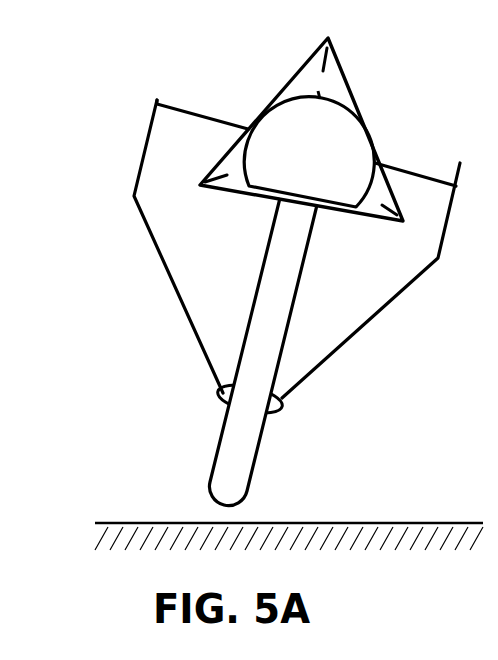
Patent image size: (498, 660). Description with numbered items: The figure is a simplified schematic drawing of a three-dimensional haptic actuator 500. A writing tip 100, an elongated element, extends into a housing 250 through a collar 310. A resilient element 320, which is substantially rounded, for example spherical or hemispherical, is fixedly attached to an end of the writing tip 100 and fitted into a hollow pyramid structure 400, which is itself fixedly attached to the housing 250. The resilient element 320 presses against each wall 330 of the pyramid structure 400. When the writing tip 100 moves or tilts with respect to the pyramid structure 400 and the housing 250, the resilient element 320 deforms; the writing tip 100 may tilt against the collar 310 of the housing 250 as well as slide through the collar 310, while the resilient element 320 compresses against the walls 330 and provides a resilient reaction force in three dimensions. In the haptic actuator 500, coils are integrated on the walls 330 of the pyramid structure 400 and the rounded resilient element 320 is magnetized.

The haptic actuator 500 is at (112, 64).
The pyramid structure 400 is at (366, 76).
The wall 330 is at (282, 88).
The resilient element 320 is at (295, 138).
The collar 310 is at (280, 406).
The housing 250 is at (188, 330).
The writing tip 100 is at (230, 433).